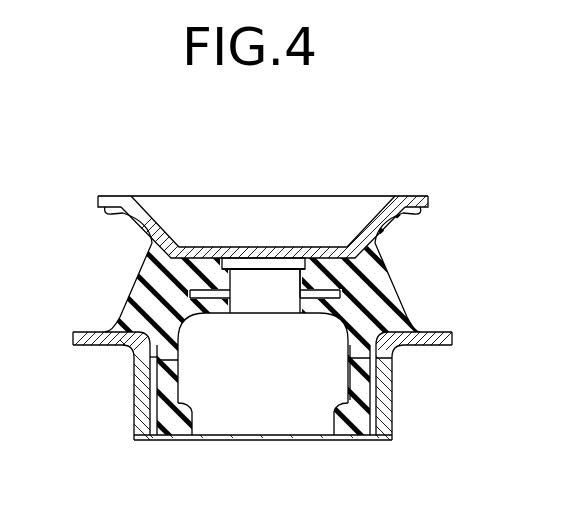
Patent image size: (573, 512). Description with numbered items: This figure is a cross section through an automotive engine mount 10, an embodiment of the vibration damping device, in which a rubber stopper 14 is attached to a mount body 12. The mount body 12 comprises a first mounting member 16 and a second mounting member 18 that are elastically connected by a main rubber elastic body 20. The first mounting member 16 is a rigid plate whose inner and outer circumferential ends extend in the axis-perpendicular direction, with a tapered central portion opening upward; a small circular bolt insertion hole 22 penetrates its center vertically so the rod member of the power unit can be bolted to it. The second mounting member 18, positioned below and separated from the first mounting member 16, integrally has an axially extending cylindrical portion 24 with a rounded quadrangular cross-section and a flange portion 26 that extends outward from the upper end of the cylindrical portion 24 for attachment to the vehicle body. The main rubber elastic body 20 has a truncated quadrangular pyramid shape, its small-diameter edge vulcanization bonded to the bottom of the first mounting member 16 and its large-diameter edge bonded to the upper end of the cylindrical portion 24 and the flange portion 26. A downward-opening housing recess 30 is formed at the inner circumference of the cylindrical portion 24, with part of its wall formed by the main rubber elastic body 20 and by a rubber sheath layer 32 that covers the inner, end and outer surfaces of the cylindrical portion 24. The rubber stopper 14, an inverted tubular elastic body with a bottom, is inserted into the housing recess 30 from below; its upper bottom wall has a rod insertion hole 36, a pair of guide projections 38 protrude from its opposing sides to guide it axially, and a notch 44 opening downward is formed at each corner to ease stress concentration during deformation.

The engine mount 10 is at (460, 180).
The mount body 12 is at (412, 246).
The rubber stopper 14 is at (152, 290).
The first mounting member 16 is at (152, 188).
The second mounting member 18 is at (442, 330).
The main rubber elastic body 20 is at (166, 276).
The bolt insertion hole 22 is at (252, 248).
The cylindrical portion 24 is at (384, 412).
The flange portion 26 is at (86, 333).
The housing recess 30 is at (368, 386).
The rubber sheath layer 32 is at (153, 403).
The rod insertion hole 36 is at (289, 292).
The guide projection 38 is at (162, 367).
The notch 44 is at (184, 420).